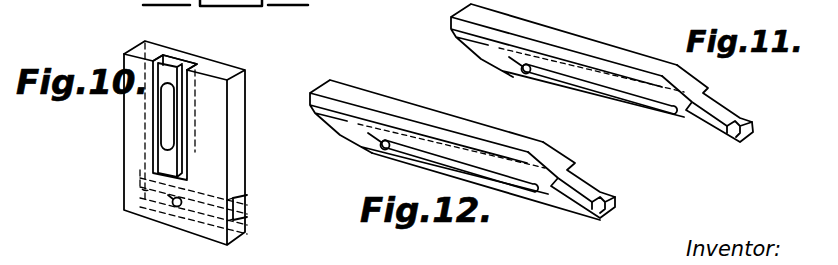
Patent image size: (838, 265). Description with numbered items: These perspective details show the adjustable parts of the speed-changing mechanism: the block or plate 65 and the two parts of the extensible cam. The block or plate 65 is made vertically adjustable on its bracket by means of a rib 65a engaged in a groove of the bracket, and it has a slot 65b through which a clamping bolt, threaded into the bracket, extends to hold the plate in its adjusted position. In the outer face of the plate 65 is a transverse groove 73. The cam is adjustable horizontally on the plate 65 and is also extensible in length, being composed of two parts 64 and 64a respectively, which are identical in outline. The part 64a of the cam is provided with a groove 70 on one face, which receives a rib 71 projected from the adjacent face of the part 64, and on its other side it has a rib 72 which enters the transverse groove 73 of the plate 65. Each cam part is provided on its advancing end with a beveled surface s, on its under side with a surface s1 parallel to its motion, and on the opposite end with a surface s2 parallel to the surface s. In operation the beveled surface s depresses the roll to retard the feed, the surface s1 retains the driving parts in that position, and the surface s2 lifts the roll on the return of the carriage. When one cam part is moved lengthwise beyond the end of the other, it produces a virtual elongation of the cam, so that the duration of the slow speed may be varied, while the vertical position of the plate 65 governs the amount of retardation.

In FIG. 10, the block or plate 65 is at (138, 147).
In FIG. 10, the rib 65a is at (168, 70).
In FIG. 10, the slot 65b is at (165, 115).
In FIG. 10, the transverse groove 73 is at (247, 203).
In FIG. 11, the cam 64 is at (598, 47).
In FIG. 12, the cam part 64a is at (507, 137).
In FIG. 12, the groove 70 is at (580, 168).
In FIG. 11, the rib 71 is at (693, 118).
In FIG. 12, the rib 72 is at (557, 197).
In FIG. 12, the beveled surface s is at (308, 110).
In FIG. 11, the beveled surface s is at (450, 20).
In FIG. 12, the surface parallel to cam motion s1 is at (513, 202).
In FIG. 11, the surface parallel to cam motion s1 is at (655, 102).
In FIG. 12, the surface s2 is at (598, 189).
In FIG. 11, the surface s2 is at (747, 108).